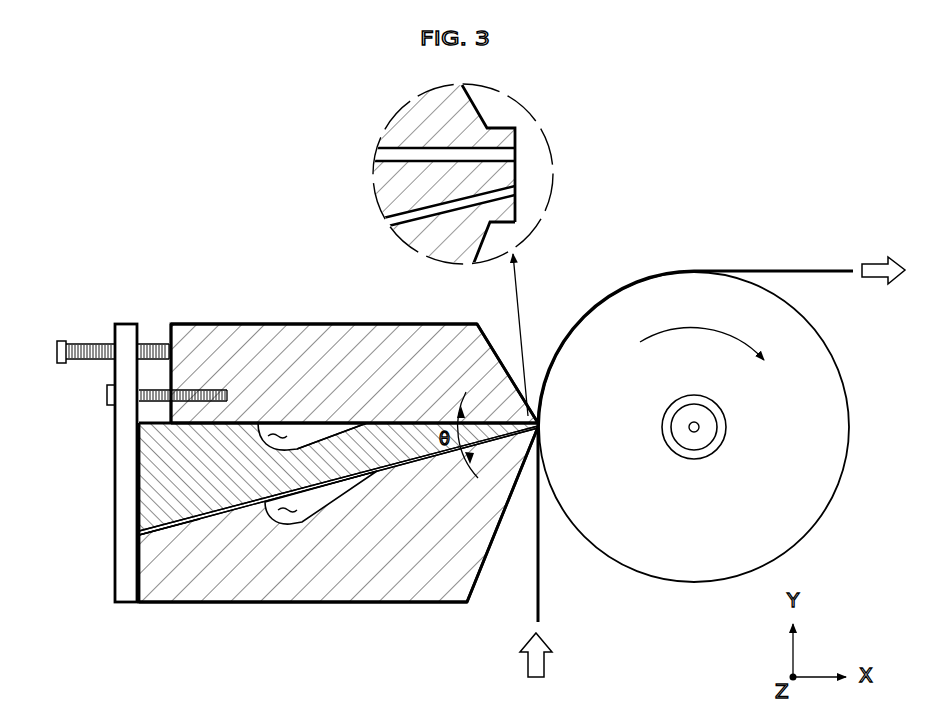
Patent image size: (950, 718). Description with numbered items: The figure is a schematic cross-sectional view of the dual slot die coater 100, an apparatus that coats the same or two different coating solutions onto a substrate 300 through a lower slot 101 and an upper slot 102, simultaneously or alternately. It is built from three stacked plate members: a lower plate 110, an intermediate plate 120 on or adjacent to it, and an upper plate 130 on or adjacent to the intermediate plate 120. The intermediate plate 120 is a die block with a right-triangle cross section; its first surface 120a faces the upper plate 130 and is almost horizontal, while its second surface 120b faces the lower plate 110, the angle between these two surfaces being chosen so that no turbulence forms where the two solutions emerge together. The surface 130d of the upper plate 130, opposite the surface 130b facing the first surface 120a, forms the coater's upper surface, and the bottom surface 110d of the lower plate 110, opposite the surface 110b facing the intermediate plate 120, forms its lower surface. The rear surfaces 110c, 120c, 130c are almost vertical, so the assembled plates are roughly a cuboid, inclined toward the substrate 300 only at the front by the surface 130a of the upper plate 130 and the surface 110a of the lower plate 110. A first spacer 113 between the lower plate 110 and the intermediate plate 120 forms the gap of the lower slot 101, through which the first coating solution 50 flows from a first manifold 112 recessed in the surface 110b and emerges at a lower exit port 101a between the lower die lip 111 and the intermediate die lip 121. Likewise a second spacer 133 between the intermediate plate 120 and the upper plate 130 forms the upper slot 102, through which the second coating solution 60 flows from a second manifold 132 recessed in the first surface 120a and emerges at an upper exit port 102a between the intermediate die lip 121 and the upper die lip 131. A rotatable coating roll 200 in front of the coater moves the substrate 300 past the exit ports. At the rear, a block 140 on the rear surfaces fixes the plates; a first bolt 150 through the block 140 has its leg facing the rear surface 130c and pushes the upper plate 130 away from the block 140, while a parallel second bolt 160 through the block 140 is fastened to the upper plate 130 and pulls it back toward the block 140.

The dual slot die coater 100 is at (117, 400).
The block 140 is at (118, 324).
The second spacer 133 is at (172, 365).
The second coating solution 60 is at (202, 422).
The second manifold 132 is at (277, 432).
The upper slot 102 is at (327, 422).
The surface of upper plate facing first surface 130b is at (363, 420).
The first surface of intermediate plate 120a is at (410, 421).
The upper surface of upper plate 130d is at (440, 324).
The front inclined surface of upper plate 130a is at (502, 363).
The first bolt 150 is at (56, 352).
The upper plate 130 is at (169, 373).
The second bolt 160 is at (105, 395).
The rear surface of upper plate 130c is at (147, 412).
The intermediate plate 120 is at (131, 470).
The rear surface of intermediate plate 120c is at (137, 485).
The lower plate 110 is at (132, 560).
The rear surface of lower plate 110c is at (138, 578).
The first spacer 113 is at (165, 528).
The first coating solution 50 is at (273, 523).
The first manifold 112 is at (297, 520).
The lower slot 101 is at (345, 485).
The surface of lower plate facing intermediate plate 110b is at (390, 466).
The second surface of intermediate plate 120b is at (428, 457).
The bottom surface of lower plate 110d is at (445, 602).
The front inclined surface of lower plate 110a is at (494, 532).
The substrate 300 is at (540, 603).
The coating roll 200 is at (700, 582).
The upper die lip 131 is at (505, 140).
The upper exit port 102a is at (522, 152).
The intermediate die lip 121 is at (505, 170).
The lower exit port 101a is at (522, 188).
The lower die lip 111 is at (507, 210).